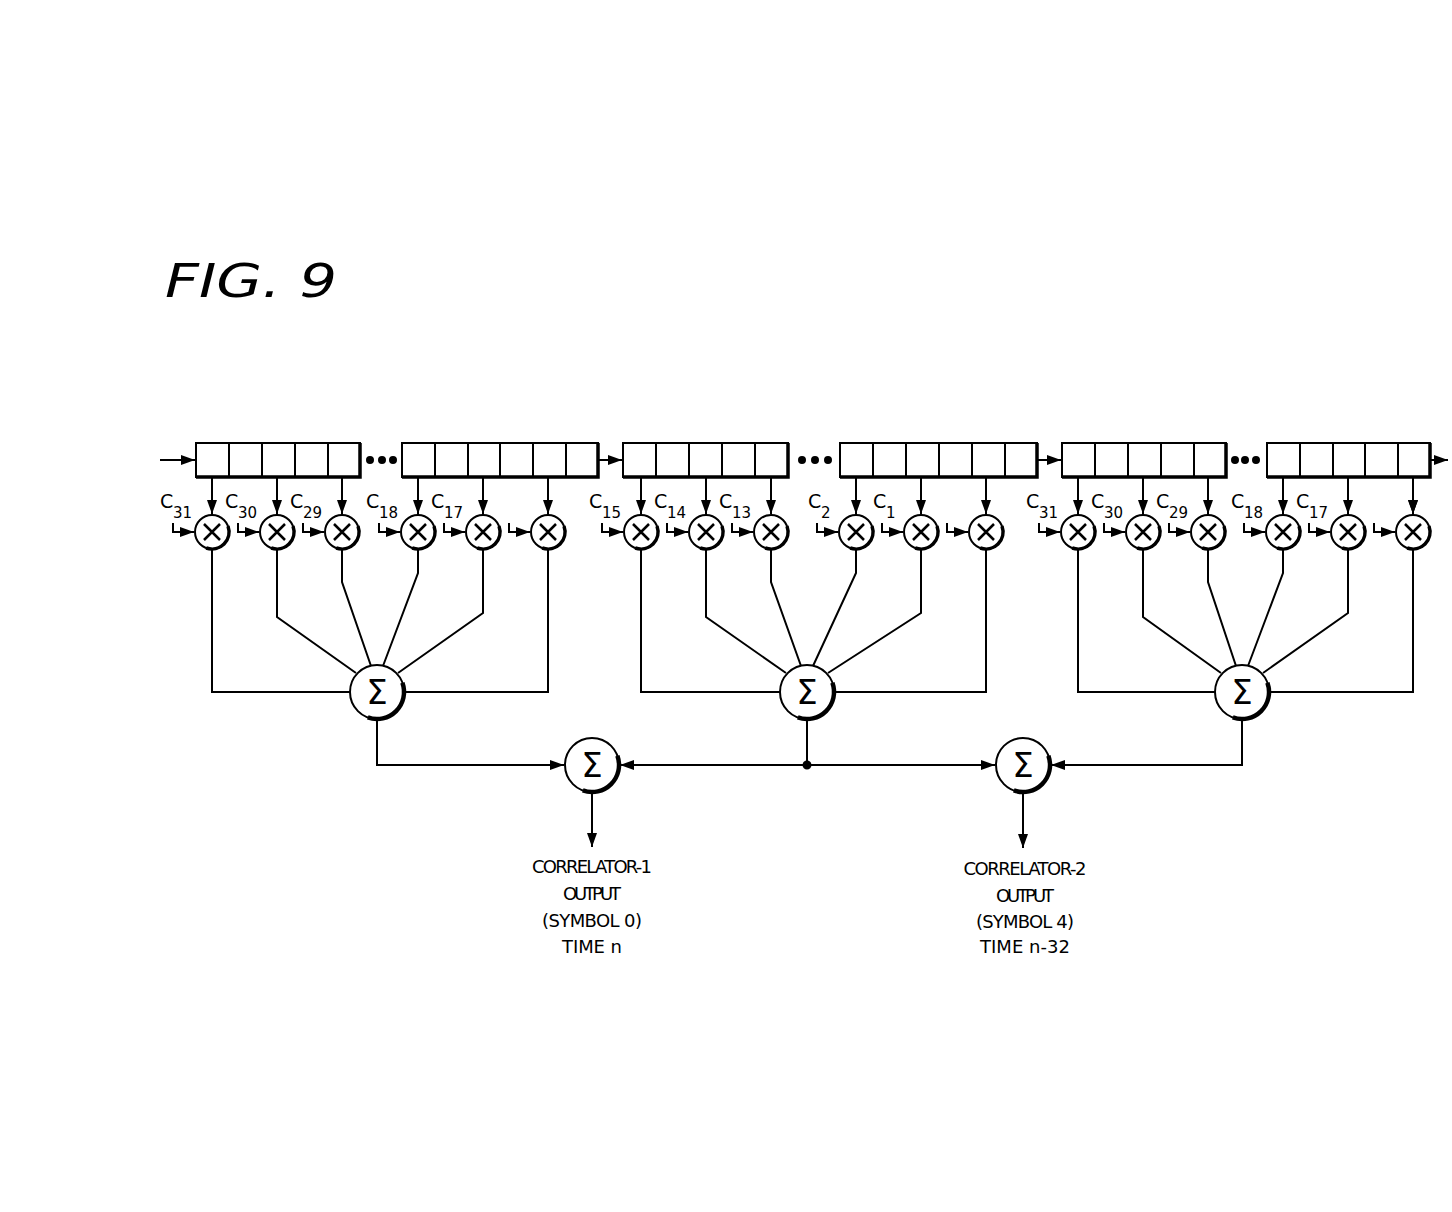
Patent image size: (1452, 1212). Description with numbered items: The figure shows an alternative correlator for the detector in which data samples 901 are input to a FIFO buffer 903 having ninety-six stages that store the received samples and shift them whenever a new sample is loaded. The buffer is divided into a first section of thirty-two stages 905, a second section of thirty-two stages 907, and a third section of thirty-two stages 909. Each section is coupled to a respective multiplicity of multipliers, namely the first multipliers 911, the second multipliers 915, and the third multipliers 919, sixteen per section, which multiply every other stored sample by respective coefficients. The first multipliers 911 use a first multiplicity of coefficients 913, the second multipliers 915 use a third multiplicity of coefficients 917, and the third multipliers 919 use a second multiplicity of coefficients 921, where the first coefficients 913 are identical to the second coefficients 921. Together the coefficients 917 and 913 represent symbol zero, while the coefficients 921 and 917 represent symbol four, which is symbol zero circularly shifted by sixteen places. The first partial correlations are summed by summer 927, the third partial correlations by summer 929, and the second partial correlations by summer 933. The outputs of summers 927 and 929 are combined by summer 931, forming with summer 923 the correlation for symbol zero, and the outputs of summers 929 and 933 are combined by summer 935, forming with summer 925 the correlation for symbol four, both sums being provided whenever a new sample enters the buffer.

The data samples 901 is at (165, 398).
The FIFO buffer 903 is at (379, 404).
The first section of 32 stages 905 is at (277, 442).
The second section of 32 stages 907 is at (712, 443).
The third section of 32 stages 909 is at (1115, 443).
The first multiplicity of multipliers 911 is at (568, 552).
The first multiplicity of coefficients 913 is at (516, 550).
The second multiplicity of multipliers 915 is at (1009, 553).
The third multiplicity of coefficients 917 is at (954, 551).
The third multiplicity of multipliers 919 is at (1428, 554).
The second multiplicity of coefficients 921 is at (1383, 549).
The summer 923 is at (423, 784).
The summer 925 is at (922, 781).
The summer 927 is at (402, 713).
The summer 929 is at (832, 712).
The summer 931 is at (617, 787).
The summer 933 is at (1268, 713).
The summer 935 is at (1048, 788).